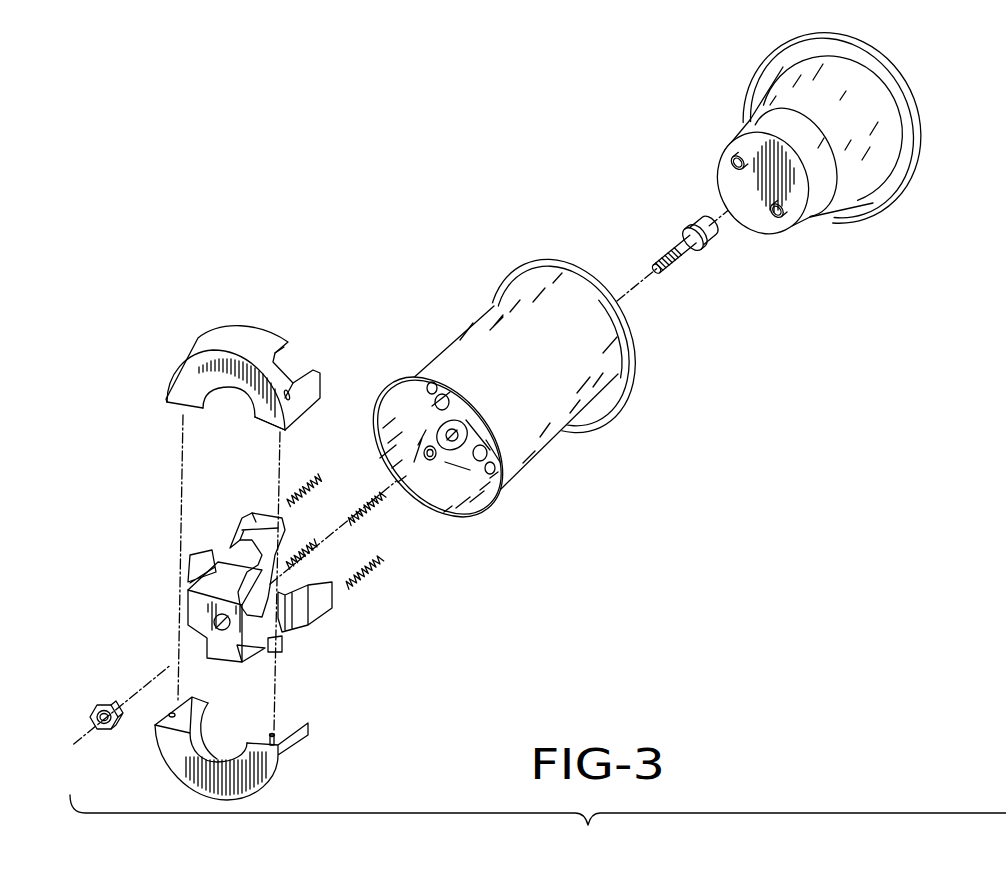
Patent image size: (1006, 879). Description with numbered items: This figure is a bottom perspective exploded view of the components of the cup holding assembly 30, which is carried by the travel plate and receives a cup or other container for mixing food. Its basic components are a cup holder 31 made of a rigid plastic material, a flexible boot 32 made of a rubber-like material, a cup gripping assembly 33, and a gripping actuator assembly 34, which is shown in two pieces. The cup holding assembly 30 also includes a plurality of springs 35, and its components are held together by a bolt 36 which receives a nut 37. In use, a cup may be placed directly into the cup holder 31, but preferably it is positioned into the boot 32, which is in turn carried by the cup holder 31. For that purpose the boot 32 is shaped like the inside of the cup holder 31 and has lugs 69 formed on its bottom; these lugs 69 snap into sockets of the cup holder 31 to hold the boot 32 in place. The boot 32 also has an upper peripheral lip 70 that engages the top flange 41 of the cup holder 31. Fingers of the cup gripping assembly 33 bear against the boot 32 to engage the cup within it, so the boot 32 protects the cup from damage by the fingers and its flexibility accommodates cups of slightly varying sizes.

The cup holding assembly 30 is at (372, 192).
The cup holder 31 is at (533, 388).
The flexible boot 32 is at (816, 138).
The cup gripping assembly 33 is at (183, 585).
The gripping actuator assembly 34 is at (255, 330).
The springs 35 is at (317, 540).
The bolt 36 is at (690, 248).
The nut 37 is at (92, 707).
The top flange 41 is at (636, 368).
The lugs 69 is at (737, 160).
The upper peripheral lip 70 is at (906, 120).